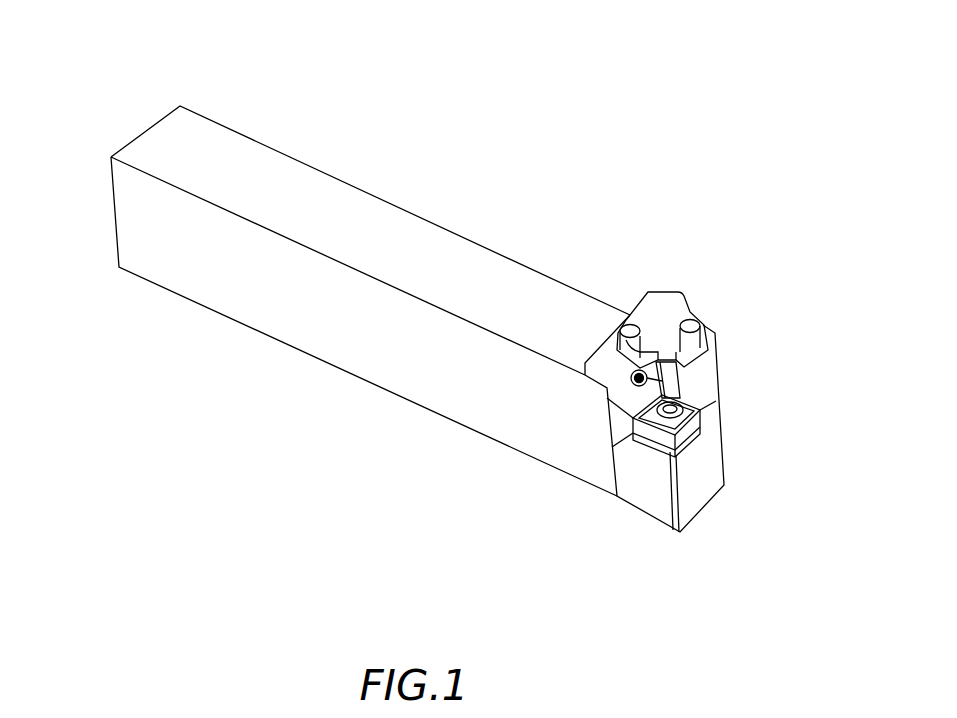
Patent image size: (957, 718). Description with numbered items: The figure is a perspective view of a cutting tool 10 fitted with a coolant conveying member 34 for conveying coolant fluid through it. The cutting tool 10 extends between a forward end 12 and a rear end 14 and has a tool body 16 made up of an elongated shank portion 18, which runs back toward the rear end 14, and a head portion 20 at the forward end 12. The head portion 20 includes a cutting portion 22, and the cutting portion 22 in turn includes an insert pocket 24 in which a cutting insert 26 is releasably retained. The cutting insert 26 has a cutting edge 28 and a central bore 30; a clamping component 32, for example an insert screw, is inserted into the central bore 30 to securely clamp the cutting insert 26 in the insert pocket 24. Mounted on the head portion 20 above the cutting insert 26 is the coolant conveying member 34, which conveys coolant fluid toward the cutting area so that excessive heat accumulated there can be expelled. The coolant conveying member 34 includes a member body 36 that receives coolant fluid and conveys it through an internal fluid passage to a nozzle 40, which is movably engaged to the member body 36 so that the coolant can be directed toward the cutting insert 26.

The cutting tool 10 is at (395, 463).
The forward end 12 is at (659, 248).
The rear end 14 is at (202, 100).
The tool body 16 is at (550, 248).
The shank portion 18 is at (380, 173).
The head portion 20 is at (603, 517).
The cutting portion 22 is at (715, 395).
The insert pocket 24 is at (690, 448).
The cutting insert 26 is at (698, 422).
The cutting edge 28 is at (670, 452).
The central bore 30 is at (677, 407).
The clamping component 32 is at (662, 418).
The coolant conveying member 34 is at (690, 302).
The member body 36 is at (645, 300).
The nozzle 40 is at (633, 381).